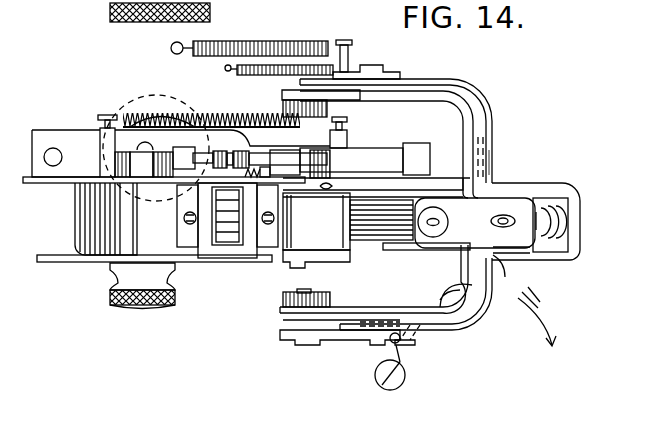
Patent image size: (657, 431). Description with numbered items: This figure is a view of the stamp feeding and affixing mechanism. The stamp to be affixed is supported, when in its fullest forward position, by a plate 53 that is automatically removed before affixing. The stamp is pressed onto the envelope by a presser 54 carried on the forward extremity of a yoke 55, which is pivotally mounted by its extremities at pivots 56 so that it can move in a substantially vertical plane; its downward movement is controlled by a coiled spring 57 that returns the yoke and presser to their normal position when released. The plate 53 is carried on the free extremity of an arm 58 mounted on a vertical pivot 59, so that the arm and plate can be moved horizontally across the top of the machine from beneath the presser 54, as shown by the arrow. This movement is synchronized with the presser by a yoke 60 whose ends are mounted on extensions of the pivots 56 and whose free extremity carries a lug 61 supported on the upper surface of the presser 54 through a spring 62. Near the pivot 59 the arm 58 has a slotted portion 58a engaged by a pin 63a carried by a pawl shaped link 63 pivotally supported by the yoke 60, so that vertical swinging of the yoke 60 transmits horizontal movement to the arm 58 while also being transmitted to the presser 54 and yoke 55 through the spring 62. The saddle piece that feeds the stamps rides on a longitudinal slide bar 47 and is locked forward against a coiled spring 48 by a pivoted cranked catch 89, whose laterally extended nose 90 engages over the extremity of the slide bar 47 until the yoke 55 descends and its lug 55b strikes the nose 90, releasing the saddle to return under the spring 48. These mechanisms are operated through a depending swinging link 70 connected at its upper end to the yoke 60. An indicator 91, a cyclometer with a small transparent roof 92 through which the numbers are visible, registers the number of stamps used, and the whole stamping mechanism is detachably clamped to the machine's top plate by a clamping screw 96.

The clamping screw 96 is at (110, 12).
The coiled spring 57 is at (255, 42).
The swinging link 70 is at (403, 60).
The coiled spring 48 is at (160, 115).
The longitudinal slide bar 47 is at (445, 163).
The yoke 60 is at (492, 118).
The yoke 55 is at (418, 98).
The lug 55b is at (490, 150).
The pivots 56 is at (310, 100).
The pivoted cranked catch 89 is at (374, 155).
The nose 90 is at (422, 153).
The lug 61 is at (518, 210).
The plate 53 is at (548, 202).
The presser 54 is at (563, 197).
The spring 62 is at (548, 240).
The arm 58 is at (437, 297).
The slotted portion 58a is at (395, 345).
The vertical pivot 59 is at (400, 378).
The pawl shaped link 63 is at (358, 343).
The pin 63a is at (407, 338).
The indicator 91 is at (212, 260).
The transparent roof 92 is at (238, 260).